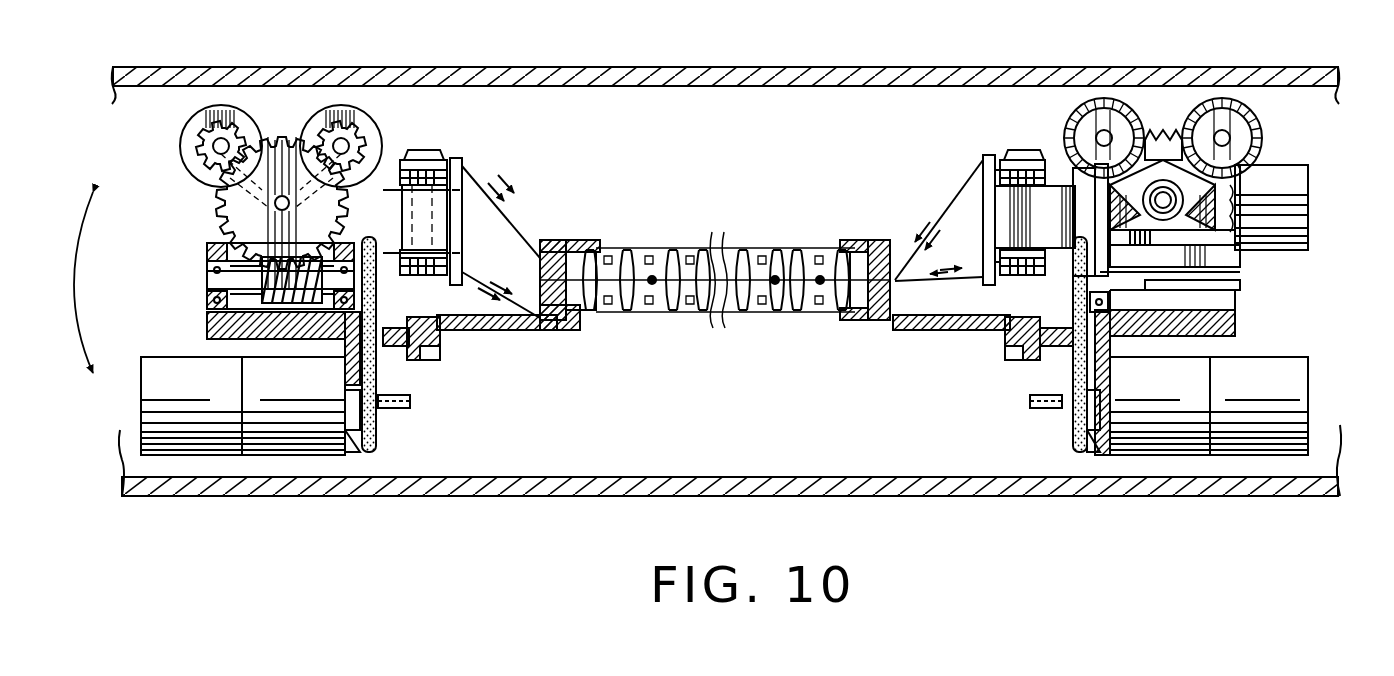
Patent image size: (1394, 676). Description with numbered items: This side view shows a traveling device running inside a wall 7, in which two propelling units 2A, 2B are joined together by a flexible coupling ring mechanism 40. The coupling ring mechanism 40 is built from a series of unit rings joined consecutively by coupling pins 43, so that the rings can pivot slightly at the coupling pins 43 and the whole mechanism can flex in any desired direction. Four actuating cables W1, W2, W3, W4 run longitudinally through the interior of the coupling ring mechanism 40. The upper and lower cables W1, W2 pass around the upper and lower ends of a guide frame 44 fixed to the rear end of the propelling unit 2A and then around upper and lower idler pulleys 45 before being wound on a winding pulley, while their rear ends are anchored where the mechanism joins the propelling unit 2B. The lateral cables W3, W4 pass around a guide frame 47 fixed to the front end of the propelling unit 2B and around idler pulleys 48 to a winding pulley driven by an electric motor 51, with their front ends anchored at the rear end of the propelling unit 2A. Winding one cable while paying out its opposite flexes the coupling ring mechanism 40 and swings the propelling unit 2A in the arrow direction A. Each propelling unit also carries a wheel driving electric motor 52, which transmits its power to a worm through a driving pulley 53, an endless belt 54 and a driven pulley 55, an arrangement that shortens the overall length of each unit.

The housing wall 7 is at (711, 67).
The propelling unit 2A is at (187, 262).
The propelling unit 2B is at (1300, 304).
The arrow direction A is at (64, 282).
The coupling ring mechanism 40 is at (733, 233).
The coupling pins 43 is at (670, 250).
The guide frame 44 is at (460, 162).
The idler pulleys 45 is at (430, 160).
The guide frame 47 is at (983, 158).
The idler pulleys 48 is at (1003, 158).
The electric motor 51 is at (1288, 166).
The electric motor 52 is at (166, 368).
The driving pulley 53 is at (378, 433).
The endless belt 54 is at (383, 352).
The driven pulley 55 is at (391, 229).
The actuating cable W1 is at (520, 232).
The actuating cable W2 is at (490, 282).
The actuating cable W3 is at (946, 216).
The actuating cable W4 is at (945, 278).